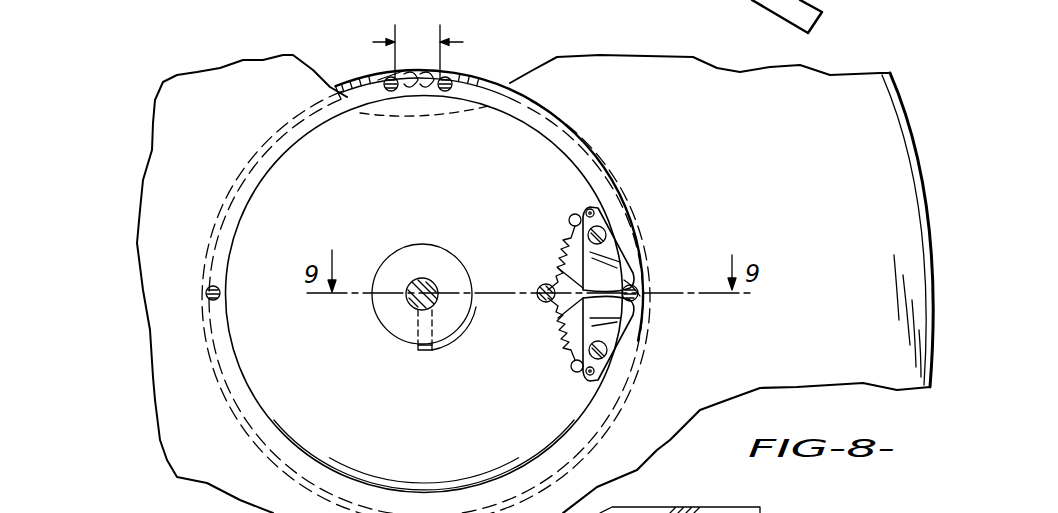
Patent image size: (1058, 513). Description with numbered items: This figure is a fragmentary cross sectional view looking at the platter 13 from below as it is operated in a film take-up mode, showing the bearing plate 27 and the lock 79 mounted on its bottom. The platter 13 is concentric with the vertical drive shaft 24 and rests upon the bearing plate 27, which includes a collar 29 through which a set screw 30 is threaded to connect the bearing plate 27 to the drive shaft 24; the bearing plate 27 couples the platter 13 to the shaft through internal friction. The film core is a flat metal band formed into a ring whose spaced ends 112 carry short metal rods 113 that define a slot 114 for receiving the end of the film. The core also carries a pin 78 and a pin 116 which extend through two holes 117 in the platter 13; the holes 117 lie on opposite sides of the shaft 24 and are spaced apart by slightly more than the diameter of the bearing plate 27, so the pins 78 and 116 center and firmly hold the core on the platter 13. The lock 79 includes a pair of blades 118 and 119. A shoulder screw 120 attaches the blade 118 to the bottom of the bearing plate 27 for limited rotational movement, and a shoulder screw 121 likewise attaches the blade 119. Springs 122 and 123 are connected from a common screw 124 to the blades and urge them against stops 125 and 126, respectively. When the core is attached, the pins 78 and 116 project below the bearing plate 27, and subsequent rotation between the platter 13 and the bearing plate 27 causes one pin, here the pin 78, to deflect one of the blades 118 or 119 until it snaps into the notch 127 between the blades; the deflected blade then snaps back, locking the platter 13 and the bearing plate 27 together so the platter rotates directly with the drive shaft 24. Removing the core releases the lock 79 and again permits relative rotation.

The platter 13 is at (895, 77).
The drive shaft 24 is at (410, 305).
The bearing plate 27 is at (553, 143).
The collar 29 is at (398, 335).
The set screw 30 is at (428, 353).
The pin 78 is at (640, 298).
The lock 79 is at (630, 335).
The spaced ends 112 is at (393, 72).
The short metal rods 113 is at (385, 91).
The slot 114 is at (433, 33).
The pin 116 is at (207, 292).
The holes 117 is at (220, 297).
The blade 118 is at (620, 250).
The blade 119 is at (618, 336).
The shoulder screw 120 is at (605, 225).
The shoulder screw 121 is at (598, 355).
The spring 122 is at (565, 250).
The spring 123 is at (557, 313).
The screw 124 is at (543, 283).
The stop 125 is at (577, 213).
The stop 126 is at (571, 362).
The notch 127 is at (637, 277).